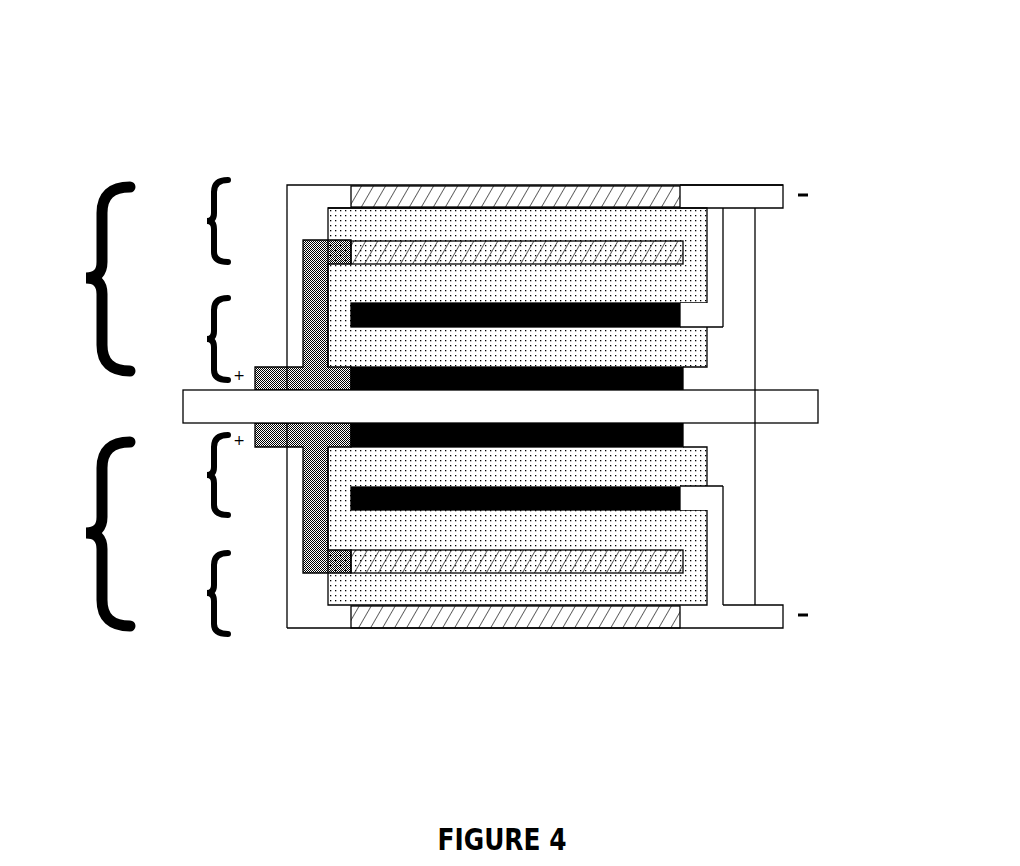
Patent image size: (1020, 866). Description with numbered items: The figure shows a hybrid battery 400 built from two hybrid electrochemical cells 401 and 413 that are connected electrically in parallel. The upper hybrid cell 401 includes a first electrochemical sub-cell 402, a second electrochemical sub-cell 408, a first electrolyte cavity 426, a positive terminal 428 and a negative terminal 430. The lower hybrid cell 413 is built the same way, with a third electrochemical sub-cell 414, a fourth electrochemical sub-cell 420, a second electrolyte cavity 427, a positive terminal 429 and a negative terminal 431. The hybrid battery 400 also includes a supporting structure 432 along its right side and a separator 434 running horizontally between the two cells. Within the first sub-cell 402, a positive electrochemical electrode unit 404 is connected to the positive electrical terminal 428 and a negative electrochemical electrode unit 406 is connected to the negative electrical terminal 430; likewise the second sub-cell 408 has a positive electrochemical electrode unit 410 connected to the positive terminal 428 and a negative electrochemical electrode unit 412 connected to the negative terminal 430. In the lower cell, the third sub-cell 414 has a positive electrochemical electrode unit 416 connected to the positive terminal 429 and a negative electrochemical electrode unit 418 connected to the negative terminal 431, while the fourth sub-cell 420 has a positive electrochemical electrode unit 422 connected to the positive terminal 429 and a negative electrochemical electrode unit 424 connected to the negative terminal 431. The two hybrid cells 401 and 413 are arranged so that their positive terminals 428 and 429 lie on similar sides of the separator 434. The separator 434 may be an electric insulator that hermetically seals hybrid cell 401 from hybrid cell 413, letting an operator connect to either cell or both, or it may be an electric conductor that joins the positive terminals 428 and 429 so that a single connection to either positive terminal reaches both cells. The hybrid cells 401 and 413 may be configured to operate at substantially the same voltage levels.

The hybrid battery 400 is at (158, 82).
The hybrid electrochemical cell 401 is at (67, 279).
The first electrochemical sub-cell 402 is at (428, 273).
The positive electrochemical electrode unit 404 is at (573, 250).
The negative electrochemical electrode unit 406 is at (502, 195).
The second electrochemical sub-cell 408 is at (428, 339).
The positive electrochemical electrode unit 410 is at (683, 371).
The negative electrochemical electrode unit 412 is at (667, 318).
The hybrid electrochemical cell 413 is at (71, 534).
The third electrochemical sub-cell 414 is at (428, 475).
The positive electrochemical electrode unit 416 is at (683, 443).
The negative electrochemical electrode unit 418 is at (667, 498).
The fourth electrochemical sub-cell 420 is at (428, 540).
The positive electrochemical electrode unit 422 is at (565, 567).
The negative electrochemical electrode unit 424 is at (493, 622).
The first electrolyte cavity 426 is at (358, 223).
The second electrolyte cavity 427 is at (660, 587).
The positive terminal 428 is at (319, 255).
The positive terminal 429 is at (312, 557).
The negative terminal 430 is at (768, 198).
The negative terminal 431 is at (763, 620).
The supporting structure 432 is at (743, 565).
The separator 434 is at (800, 403).